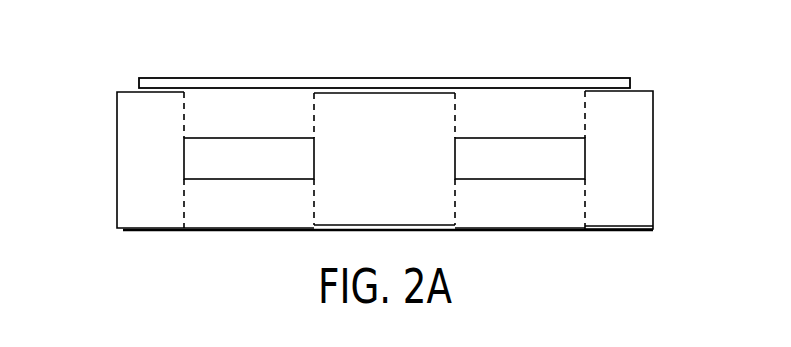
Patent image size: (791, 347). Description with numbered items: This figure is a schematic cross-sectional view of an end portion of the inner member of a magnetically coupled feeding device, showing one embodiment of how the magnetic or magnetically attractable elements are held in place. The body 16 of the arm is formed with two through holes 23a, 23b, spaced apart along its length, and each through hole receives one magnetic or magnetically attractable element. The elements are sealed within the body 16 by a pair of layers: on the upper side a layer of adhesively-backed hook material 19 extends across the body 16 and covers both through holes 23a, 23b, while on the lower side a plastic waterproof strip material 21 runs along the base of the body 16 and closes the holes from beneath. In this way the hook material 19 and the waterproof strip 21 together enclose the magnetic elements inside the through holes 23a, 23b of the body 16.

The body 16 is at (132, 161).
The layer of adhesively-backed hook material 19 is at (429, 77).
The plastic waterproof strip material 21 is at (273, 232).
The through hole 23a is at (233, 212).
The through hole 23b is at (518, 212).